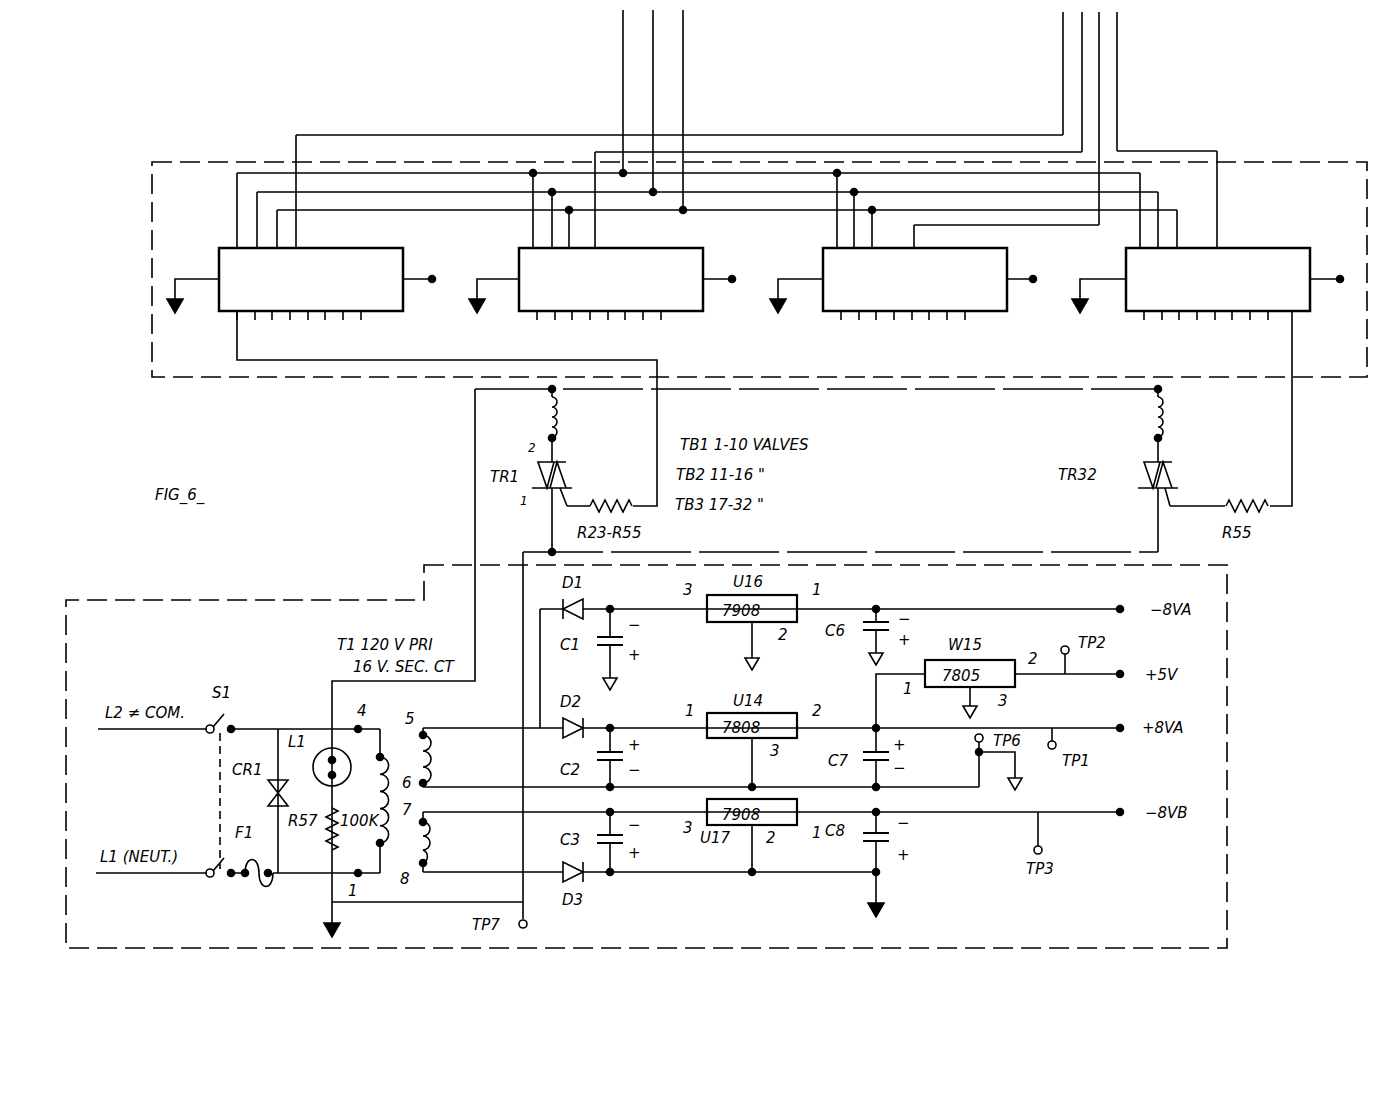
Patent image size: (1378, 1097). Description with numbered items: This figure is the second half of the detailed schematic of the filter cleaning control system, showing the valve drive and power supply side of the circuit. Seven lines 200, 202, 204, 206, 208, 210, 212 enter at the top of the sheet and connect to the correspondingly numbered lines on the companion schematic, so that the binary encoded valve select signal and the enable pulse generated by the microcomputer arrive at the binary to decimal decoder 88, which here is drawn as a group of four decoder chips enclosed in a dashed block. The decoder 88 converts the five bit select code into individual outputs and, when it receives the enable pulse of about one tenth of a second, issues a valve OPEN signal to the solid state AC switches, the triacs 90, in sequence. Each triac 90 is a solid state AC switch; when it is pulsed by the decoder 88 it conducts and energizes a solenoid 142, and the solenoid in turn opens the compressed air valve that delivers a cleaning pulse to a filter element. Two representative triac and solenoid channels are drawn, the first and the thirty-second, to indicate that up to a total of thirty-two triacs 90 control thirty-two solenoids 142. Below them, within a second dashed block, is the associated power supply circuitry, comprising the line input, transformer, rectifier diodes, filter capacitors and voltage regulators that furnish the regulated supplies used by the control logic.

The line 200 is at (623, 52).
The line 202 is at (653, 32).
The line 204 is at (683, 52).
The line 206 is at (1063, 47).
The line 208 is at (1082, 32).
The line 210 is at (1099, 26).
The line 212 is at (1117, 52).
The binary to decimal decoder 88 is at (1293, 160).
The solenoid 142 is at (556, 418).
The triac 90 is at (568, 474).